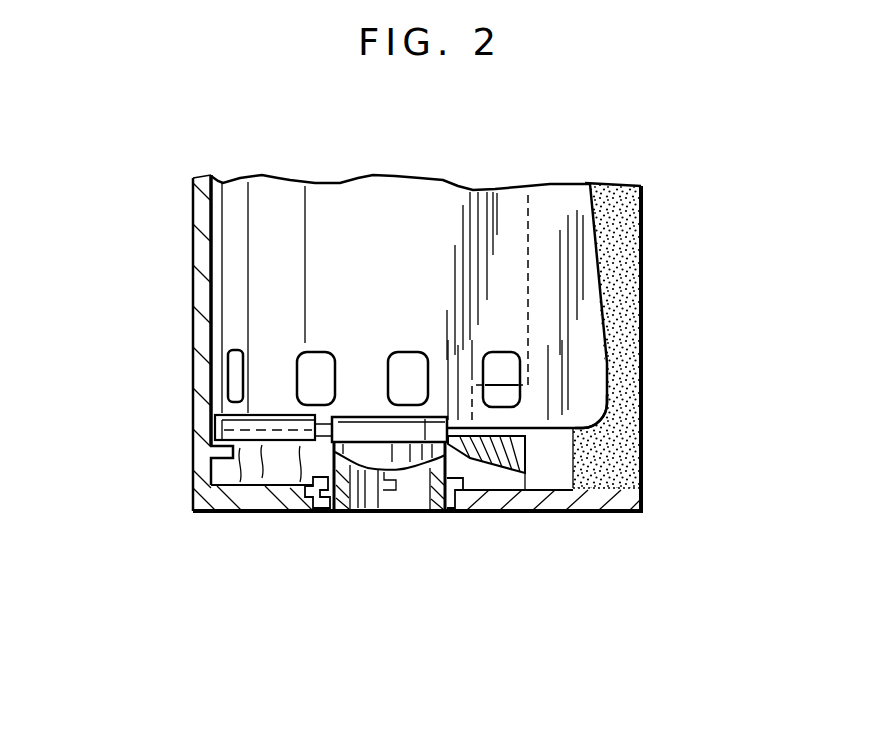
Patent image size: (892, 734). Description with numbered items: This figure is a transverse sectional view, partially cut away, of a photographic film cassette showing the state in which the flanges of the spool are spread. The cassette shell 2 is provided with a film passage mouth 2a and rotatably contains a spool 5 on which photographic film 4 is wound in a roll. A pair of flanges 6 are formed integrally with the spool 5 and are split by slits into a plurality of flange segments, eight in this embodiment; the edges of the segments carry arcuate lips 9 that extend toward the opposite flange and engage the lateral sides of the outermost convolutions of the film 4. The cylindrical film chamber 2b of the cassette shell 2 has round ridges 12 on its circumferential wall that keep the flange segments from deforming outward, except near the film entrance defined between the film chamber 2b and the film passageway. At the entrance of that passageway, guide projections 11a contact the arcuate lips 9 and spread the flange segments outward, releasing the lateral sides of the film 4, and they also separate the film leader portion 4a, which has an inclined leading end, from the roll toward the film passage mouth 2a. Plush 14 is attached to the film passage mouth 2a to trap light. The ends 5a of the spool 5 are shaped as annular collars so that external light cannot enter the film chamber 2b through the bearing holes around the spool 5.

The cassette shell 2 is at (195, 267).
The film passage mouth 2a is at (643, 274).
The film chamber 2b is at (262, 475).
The photographic film 4 is at (403, 197).
The film leader portion 4a is at (588, 375).
The spool 5 is at (445, 532).
The ends of spool 5a is at (334, 512).
The flanges 6 is at (288, 447).
The arcuate lips 9 is at (268, 413).
The guide projections 11a is at (513, 470).
The round ridges 12 is at (221, 492).
The plush 14 is at (617, 458).